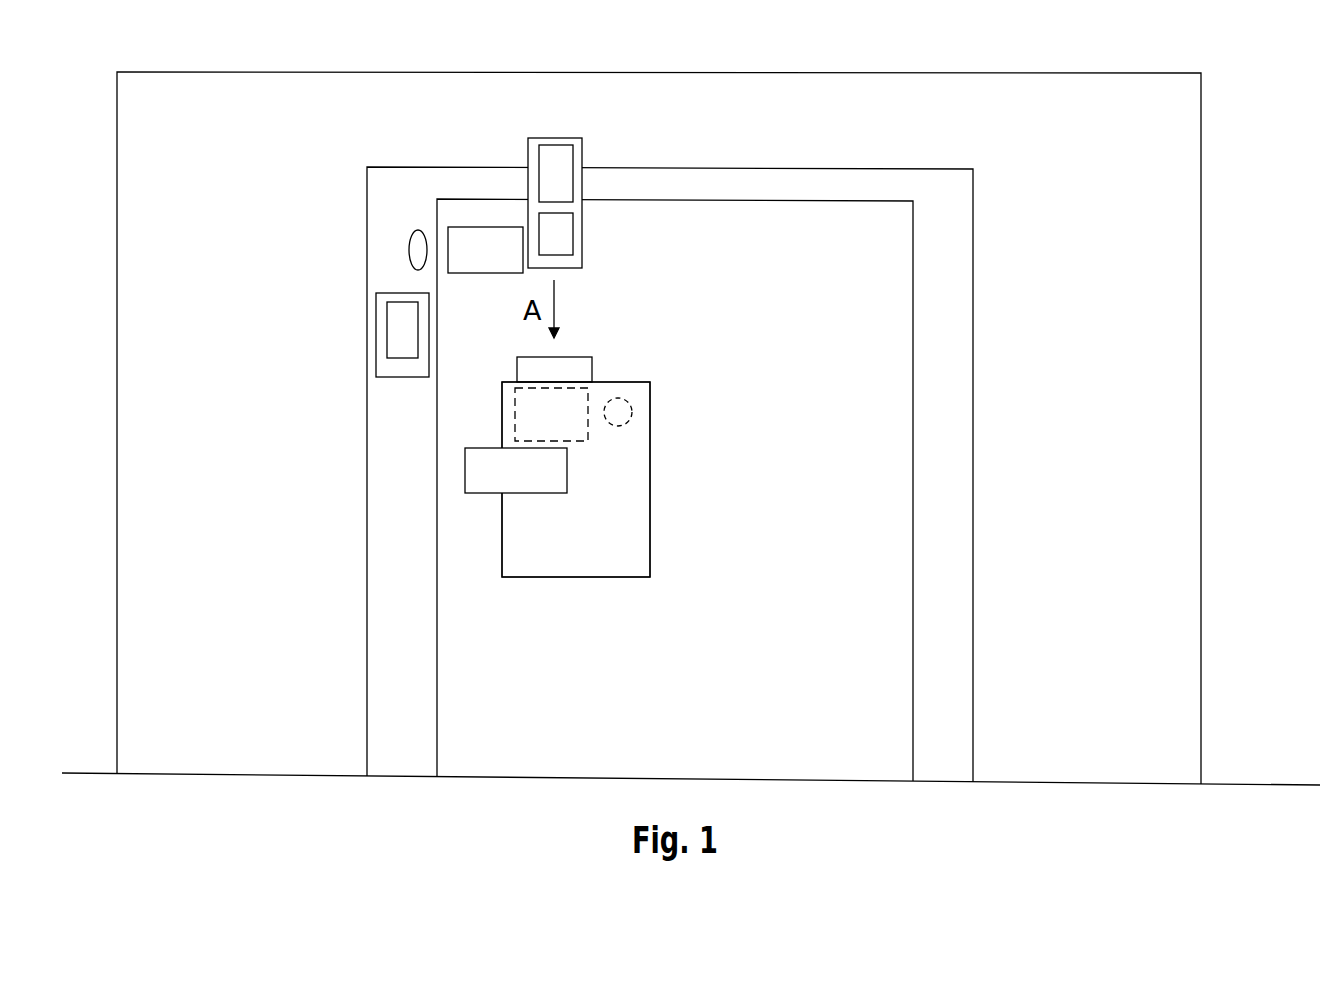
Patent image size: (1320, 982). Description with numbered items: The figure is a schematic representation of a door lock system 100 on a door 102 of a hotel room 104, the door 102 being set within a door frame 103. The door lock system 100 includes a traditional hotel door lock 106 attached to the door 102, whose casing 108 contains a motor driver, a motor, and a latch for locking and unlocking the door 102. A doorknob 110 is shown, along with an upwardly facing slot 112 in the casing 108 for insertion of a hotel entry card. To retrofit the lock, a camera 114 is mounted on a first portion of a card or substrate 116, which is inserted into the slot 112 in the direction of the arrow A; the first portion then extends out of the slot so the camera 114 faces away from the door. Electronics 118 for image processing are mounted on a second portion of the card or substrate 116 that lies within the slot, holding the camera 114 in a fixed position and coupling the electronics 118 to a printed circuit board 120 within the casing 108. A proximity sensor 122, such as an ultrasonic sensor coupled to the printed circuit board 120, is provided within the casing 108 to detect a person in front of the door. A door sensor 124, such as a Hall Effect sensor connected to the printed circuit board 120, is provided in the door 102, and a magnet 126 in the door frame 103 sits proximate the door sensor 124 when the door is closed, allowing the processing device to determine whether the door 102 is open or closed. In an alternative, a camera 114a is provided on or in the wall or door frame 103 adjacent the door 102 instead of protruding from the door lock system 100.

The door lock system 100 is at (612, 447).
The door 102 is at (852, 274).
The door frame 103 is at (955, 262).
The hotel room 104 is at (275, 183).
The traditional hotel door lock 106 is at (608, 561).
The casing 108 is at (650, 552).
The doorknob 110 is at (538, 484).
The slot 112 is at (570, 373).
The camera 114 is at (560, 180).
The camera 114a is at (403, 322).
The card or substrate 116 is at (548, 188).
The electronics 118 is at (577, 240).
The printed circuit board 120 is at (517, 394).
The proximity sensor 122 is at (633, 414).
The door sensor 124 is at (507, 264).
The magnet 126 is at (410, 249).